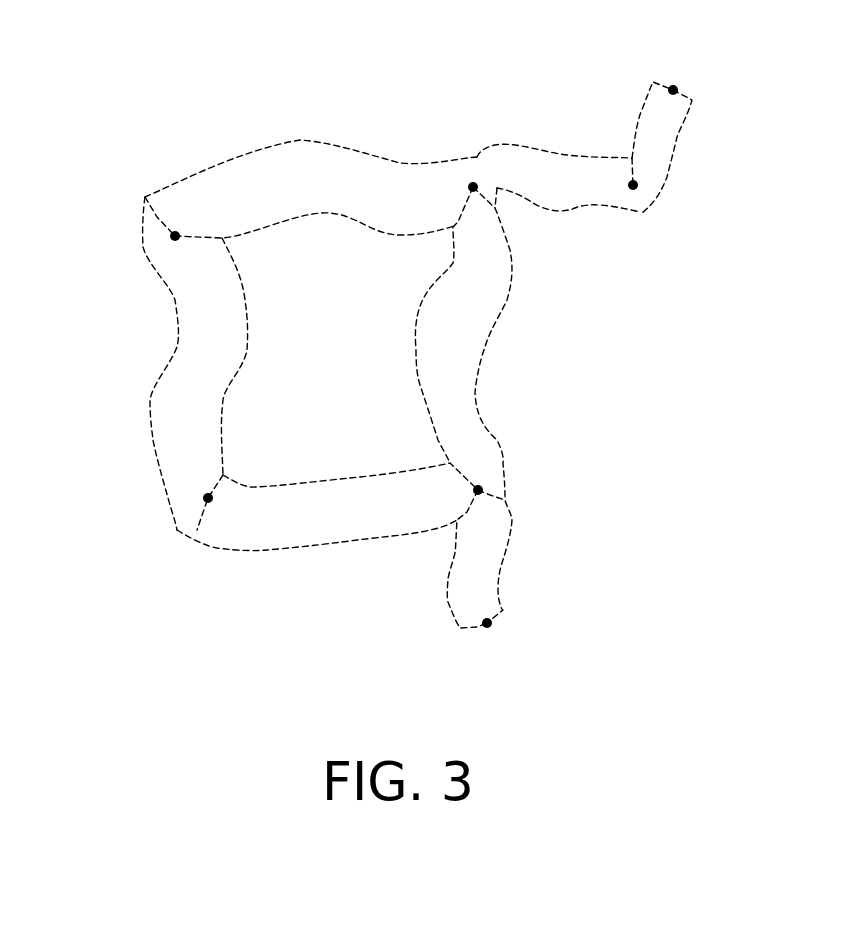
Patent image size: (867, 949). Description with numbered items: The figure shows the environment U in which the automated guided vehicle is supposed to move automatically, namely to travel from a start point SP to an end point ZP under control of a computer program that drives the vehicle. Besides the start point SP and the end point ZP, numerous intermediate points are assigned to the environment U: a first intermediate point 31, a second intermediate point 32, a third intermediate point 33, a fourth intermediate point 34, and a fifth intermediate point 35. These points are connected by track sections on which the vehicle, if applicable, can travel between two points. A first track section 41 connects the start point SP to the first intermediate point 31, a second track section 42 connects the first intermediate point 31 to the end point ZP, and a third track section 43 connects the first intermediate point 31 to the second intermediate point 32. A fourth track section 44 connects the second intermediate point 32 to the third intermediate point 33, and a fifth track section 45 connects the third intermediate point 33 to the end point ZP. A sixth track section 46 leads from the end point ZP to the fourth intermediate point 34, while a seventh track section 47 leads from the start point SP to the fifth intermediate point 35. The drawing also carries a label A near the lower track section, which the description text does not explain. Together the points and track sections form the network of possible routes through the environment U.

The environment U is at (208, 118).
The first intermediate point 31 is at (473, 187).
The second intermediate point 32 is at (175, 236).
The third intermediate point 33 is at (208, 498).
The fourth intermediate point 34 is at (487, 623).
The fifth intermediate point 35 is at (673, 90).
The first track section 41 is at (545, 183).
The second track section 42 is at (457, 350).
The third track section 43 is at (332, 168).
The fourth track section 44 is at (203, 320).
The fifth track section 45 is at (298, 522).
The sixth track section 46 is at (482, 563).
The seventh track section 47 is at (657, 155).
The start point SP is at (633, 185).
The end point ZP is at (478, 490).
The lower piece line A is at (460, 585).